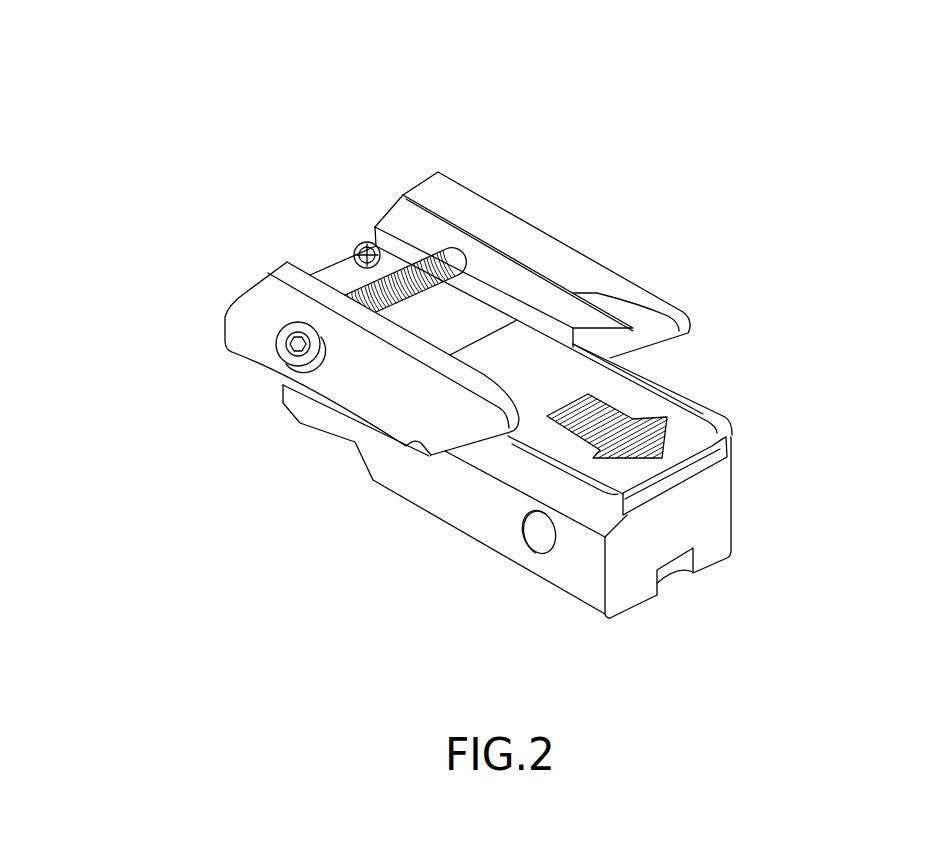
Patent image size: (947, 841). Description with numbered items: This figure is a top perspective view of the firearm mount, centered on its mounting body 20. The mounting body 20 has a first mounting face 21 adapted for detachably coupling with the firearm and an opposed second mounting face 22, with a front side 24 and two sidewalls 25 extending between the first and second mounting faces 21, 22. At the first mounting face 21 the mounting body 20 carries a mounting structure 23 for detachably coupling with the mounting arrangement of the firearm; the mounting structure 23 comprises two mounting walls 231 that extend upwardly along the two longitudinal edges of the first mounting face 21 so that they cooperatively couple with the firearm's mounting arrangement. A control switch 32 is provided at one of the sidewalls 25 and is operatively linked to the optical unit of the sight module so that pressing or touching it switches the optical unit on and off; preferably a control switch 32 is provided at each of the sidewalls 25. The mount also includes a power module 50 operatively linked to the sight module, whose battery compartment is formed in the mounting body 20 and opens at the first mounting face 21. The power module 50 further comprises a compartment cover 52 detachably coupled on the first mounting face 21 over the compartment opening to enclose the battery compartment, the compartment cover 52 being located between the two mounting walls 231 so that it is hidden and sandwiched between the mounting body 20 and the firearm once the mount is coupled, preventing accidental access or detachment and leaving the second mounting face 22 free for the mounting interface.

The mounting body 20 is at (578, 113).
The first mounting face 21 is at (460, 318).
The second mounting face 22 is at (383, 503).
The mounting structure 23 is at (137, 233).
The mounting walls 231 is at (262, 317).
The front side 24 is at (327, 252).
The sidewalls 25 is at (452, 500).
The control switch 32 is at (540, 538).
The power module 50 is at (855, 267).
The compartment cover 52 is at (685, 437).